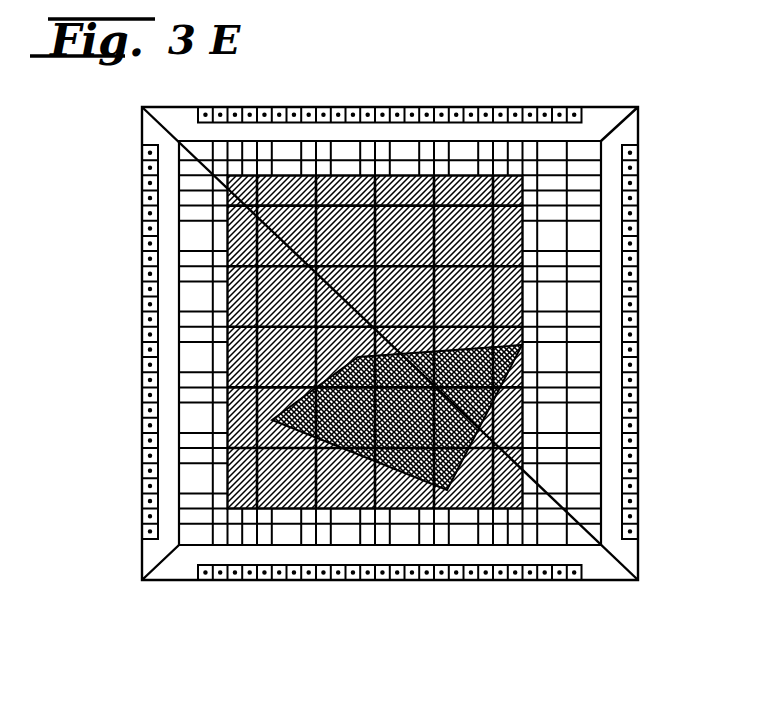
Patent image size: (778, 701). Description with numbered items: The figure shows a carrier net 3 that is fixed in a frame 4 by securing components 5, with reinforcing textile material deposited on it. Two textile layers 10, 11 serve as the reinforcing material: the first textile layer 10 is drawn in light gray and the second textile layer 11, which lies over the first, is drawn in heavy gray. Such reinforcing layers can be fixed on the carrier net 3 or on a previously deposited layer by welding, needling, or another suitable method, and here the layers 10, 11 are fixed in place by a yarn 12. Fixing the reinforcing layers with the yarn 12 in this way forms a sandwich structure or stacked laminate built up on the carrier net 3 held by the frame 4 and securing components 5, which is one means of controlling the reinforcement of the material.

The carrier net 3 is at (578, 158).
The frame 4 is at (610, 570).
The securing components 5 is at (640, 272).
The textile layer 10 is at (512, 213).
The textile layer 11 is at (524, 348).
The yarn 12 is at (577, 520).